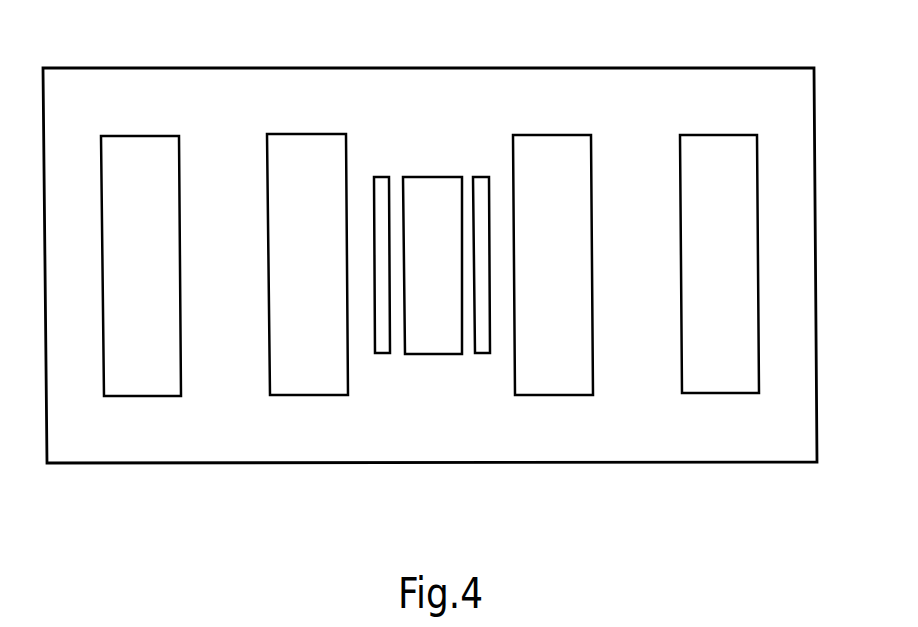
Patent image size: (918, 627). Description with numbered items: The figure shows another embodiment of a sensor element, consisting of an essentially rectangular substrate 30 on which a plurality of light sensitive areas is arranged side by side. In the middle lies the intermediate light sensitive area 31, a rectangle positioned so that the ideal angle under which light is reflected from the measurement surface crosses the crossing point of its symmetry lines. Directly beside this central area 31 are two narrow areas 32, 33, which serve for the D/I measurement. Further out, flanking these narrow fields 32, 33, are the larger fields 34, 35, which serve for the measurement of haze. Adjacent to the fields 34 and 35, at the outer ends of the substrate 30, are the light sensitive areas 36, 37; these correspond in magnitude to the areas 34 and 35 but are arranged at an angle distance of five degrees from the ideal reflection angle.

The substrate 30 is at (143, 452).
The intermediate light sensitive area 31 is at (423, 190).
The narrow area 32 is at (383, 345).
The narrow area 33 is at (483, 345).
The field 34 is at (307, 143).
The field 35 is at (545, 142).
The light sensitive area 36 is at (132, 147).
The light sensitive area 37 is at (718, 145).